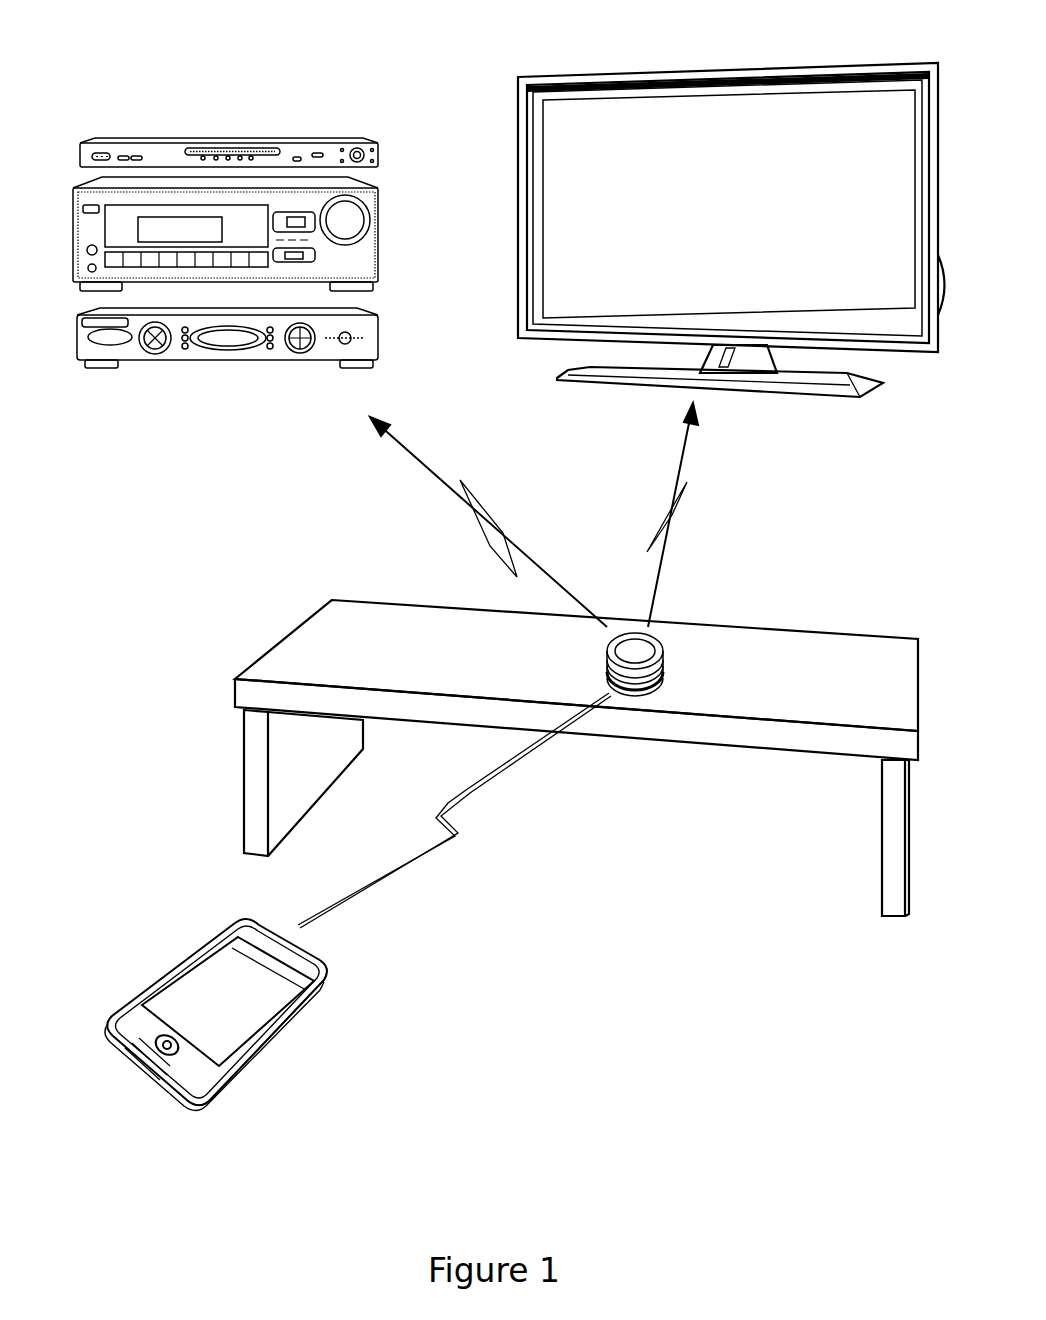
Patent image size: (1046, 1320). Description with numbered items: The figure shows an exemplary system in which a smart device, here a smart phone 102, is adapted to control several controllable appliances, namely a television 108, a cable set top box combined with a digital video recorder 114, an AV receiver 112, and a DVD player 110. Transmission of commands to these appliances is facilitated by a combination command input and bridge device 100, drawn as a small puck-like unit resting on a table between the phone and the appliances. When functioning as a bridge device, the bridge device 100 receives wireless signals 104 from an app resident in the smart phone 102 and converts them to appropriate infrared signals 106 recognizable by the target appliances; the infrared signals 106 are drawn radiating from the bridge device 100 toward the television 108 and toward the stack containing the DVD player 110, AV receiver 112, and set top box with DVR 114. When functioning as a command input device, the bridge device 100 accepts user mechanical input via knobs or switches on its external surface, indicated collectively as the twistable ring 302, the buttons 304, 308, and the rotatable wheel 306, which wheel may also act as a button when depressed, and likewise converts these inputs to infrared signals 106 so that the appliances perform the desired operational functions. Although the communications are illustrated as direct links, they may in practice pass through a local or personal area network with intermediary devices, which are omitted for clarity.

The combination command input and bridge device 100 is at (720, 642).
The smart phone 102 is at (292, 1023).
The wireless signals 104 is at (448, 830).
The infrared signals 106 is at (410, 453).
The television 108 is at (652, 72).
The DVD player 110 is at (150, 138).
The AV receiver 112 is at (380, 237).
The cable set top box combined with digital video recorder 114 is at (135, 365).
The twistable ring 302 is at (678, 642).
The button 304 is at (681, 643).
The rotatable wheel 306 is at (681, 682).
The button 308 is at (645, 645).